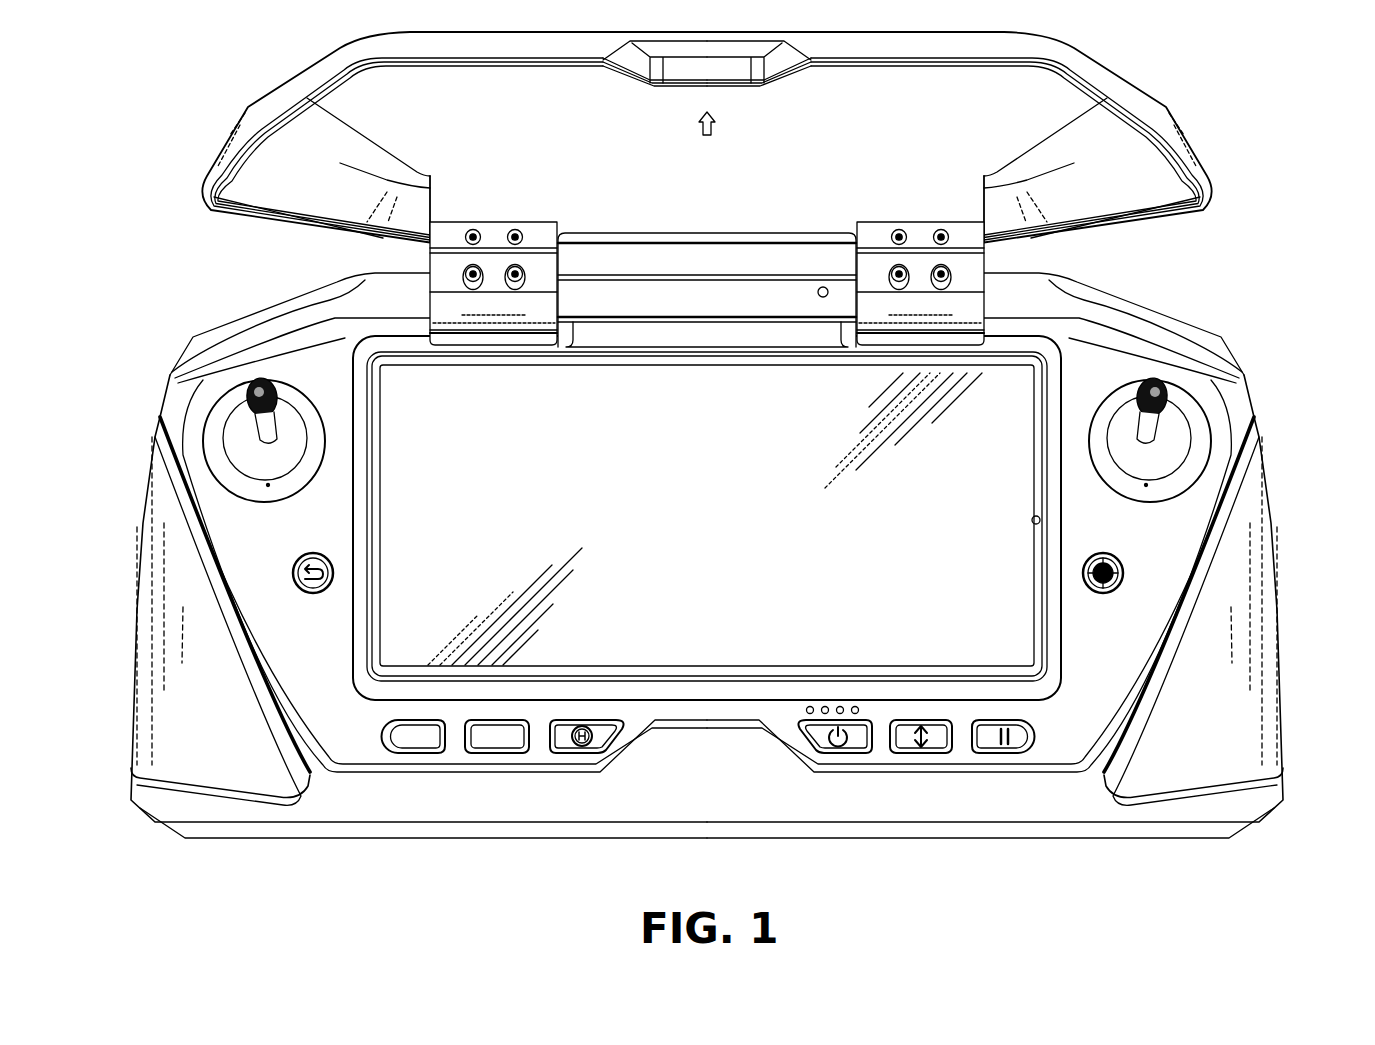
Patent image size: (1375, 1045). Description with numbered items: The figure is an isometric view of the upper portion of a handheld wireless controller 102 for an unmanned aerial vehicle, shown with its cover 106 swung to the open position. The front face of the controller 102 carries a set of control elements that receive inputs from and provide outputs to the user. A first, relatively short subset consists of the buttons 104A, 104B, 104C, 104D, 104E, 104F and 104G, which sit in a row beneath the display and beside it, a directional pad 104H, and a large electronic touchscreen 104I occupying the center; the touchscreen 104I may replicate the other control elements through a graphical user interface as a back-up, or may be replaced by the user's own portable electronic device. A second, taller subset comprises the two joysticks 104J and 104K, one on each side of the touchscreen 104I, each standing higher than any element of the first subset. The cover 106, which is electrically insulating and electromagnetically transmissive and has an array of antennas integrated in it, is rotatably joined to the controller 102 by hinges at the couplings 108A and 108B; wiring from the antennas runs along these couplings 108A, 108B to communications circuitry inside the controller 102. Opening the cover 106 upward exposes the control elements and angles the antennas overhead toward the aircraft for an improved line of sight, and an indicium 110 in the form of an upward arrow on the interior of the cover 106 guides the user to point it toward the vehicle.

The controller 102 is at (212, 724).
The control element 104A is at (416, 754).
The control element 104B is at (497, 754).
The control element 104C is at (581, 754).
The control element 104D is at (843, 754).
The control element 104E is at (922, 754).
The control element 104F is at (1005, 754).
The control element 104G is at (292, 577).
The control element 104H is at (1124, 566).
The control element 104I is at (990, 630).
The control element 104J is at (256, 392).
The control element 104K is at (1158, 392).
The cover 106 is at (368, 148).
The coupling 108A is at (497, 303).
The coupling 108B is at (953, 306).
The indicium 110 is at (730, 125).